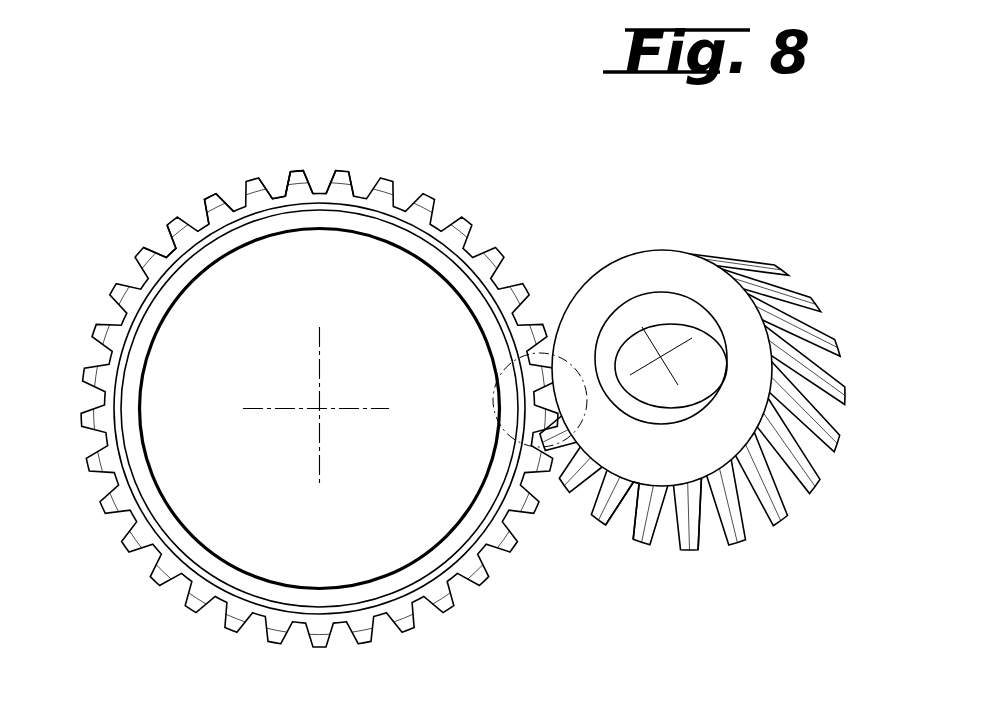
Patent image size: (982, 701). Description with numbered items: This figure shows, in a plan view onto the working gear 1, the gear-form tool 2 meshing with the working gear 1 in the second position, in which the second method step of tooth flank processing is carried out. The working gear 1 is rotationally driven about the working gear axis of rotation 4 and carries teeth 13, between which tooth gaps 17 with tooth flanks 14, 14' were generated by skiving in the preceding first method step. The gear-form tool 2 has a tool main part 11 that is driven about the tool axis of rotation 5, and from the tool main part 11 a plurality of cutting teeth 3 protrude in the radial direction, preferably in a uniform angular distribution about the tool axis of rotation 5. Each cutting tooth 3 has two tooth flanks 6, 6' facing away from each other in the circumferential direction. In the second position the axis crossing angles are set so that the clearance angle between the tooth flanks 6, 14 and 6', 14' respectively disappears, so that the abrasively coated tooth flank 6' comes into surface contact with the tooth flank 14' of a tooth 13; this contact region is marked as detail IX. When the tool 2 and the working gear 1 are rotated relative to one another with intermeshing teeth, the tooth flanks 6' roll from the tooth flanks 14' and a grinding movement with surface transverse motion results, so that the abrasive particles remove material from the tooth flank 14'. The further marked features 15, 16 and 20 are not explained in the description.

The working gear 1 is at (455, 202).
The gear-form tool 2 is at (730, 242).
The cutting teeth 3 is at (745, 532).
The working gear axis of rotation 4 is at (320, 408).
The tool axis of rotation 5 is at (662, 356).
The tooth flank 6 is at (673, 554).
The tooth flank 6' is at (705, 553).
The tool main part 11 is at (742, 323).
The teeth 13 is at (297, 170).
The tooth flank 14 is at (378, 143).
The tooth flank 14' is at (341, 138).
The tooth root 15 is at (280, 195).
The tooth tip 16 is at (212, 197).
The tooth gaps 17 is at (165, 247).
The tooth gap of second gear wheel 20 is at (622, 528).
The detail IX is at (576, 352).